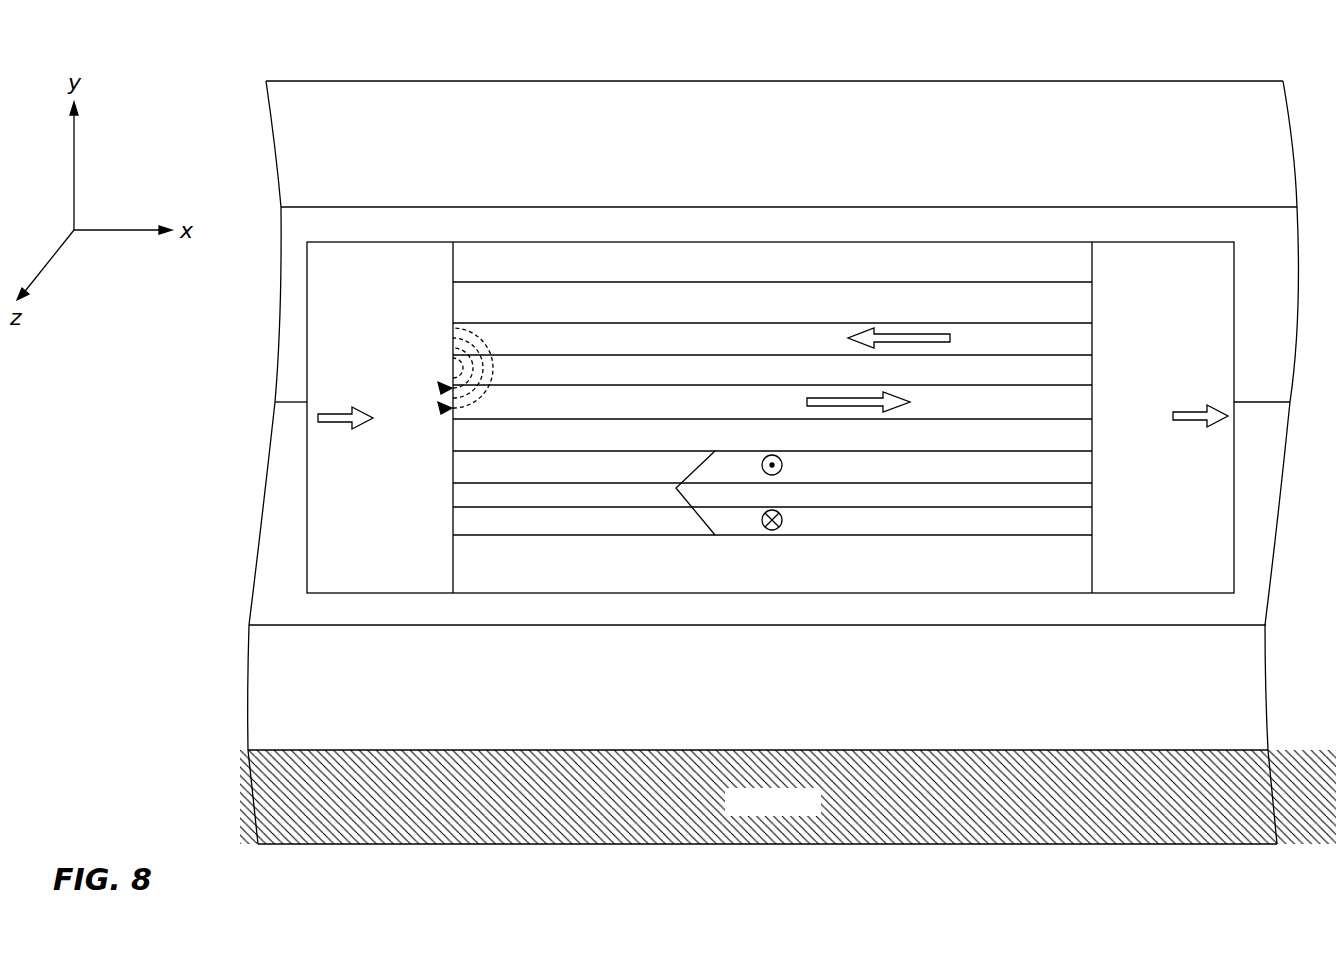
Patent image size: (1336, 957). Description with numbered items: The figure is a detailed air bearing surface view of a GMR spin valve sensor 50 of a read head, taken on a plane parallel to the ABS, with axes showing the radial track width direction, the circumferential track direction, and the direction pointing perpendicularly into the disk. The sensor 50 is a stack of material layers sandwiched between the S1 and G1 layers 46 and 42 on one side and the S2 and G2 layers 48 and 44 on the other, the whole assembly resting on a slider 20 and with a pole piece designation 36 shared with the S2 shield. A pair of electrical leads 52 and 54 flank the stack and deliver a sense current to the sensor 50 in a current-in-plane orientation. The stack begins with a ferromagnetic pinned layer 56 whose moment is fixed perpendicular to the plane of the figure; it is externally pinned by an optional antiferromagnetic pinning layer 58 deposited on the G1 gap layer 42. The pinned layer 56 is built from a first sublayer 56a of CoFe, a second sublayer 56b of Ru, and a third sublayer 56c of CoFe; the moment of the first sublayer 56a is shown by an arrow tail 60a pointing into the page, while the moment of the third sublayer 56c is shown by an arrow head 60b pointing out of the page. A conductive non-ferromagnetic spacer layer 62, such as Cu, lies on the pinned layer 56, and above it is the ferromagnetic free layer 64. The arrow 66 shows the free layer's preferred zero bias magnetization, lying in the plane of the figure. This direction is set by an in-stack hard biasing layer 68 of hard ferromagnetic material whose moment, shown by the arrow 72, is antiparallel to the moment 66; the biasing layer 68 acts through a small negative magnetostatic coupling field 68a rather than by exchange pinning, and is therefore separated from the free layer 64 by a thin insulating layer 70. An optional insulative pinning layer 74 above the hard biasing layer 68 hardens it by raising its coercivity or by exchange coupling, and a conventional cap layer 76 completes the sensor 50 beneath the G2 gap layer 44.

The slider 20 is at (256, 790).
The first pole piece P1 36 is at (282, 130).
The S2 layer 48 is at (740, 144).
The G1 gap layer 42 is at (260, 560).
The G2 gap layer 44 is at (284, 307).
The S1 layer 46 is at (250, 678).
The GMR spin valve sensor 50 is at (595, 228).
The electrical lead 52 is at (307, 260).
The electrical lead 54 is at (1222, 292).
The pinned layer 56 is at (779, 486).
The first sublayer 56a is at (1085, 523).
The second sublayer 56b is at (1085, 496).
The third sublayer 56c is at (1085, 466).
The antiferromagnetic pinning layer 58 is at (464, 569).
The arrow tail 60a is at (783, 522).
The arrow head 60b is at (783, 467).
The spacer layer 62 is at (464, 439).
The free layer 64 is at (1085, 412).
The arrow 66 is at (912, 403).
The hard biasing layer 68 is at (1085, 337).
The magneto static coupling field 68a is at (425, 355).
The insulating layer 70 is at (1085, 372).
The arrow 72 is at (952, 339).
The pinning layer 74 is at (460, 313).
The cap layer 76 is at (458, 272).